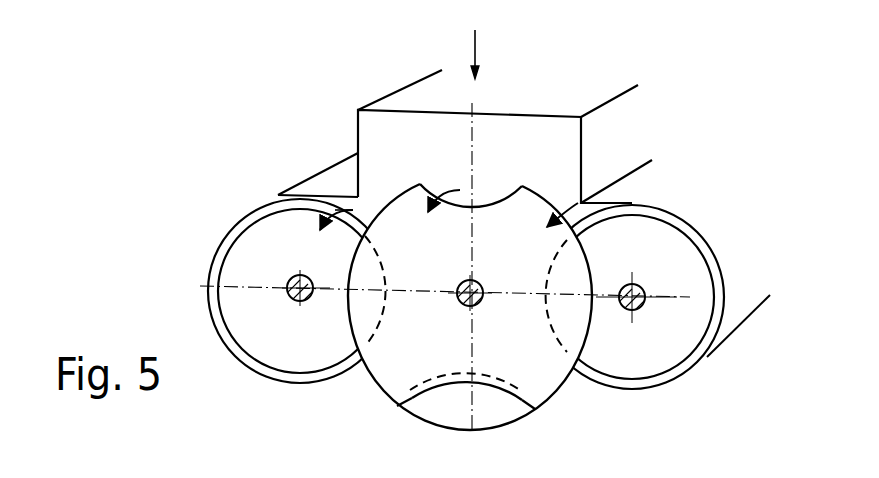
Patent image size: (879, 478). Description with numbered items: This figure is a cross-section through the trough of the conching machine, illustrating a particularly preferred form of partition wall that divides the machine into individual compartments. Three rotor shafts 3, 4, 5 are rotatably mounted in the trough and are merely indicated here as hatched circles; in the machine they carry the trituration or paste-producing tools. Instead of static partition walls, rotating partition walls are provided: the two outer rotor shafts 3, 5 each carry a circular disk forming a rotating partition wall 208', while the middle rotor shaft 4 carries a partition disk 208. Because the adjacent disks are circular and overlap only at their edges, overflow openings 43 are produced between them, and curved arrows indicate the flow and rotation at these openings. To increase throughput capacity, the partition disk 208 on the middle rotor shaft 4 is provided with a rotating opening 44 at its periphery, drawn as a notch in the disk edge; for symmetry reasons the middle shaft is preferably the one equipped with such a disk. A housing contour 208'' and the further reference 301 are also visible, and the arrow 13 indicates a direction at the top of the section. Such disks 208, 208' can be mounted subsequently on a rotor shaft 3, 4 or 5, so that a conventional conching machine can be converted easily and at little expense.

The section marker 301 is at (137, 9).
The direction of paper feed 13 is at (482, 37).
The rotating opening 44 is at (498, 180).
The partition disk 208 is at (465, 124).
The rotating partition walls 208' is at (466, 262).
The lower lobe segment 208'' is at (505, 402).
The overflow openings 43 is at (343, 210).
The rotor shaft 3 is at (304, 301).
The middle rotor shaft 4 is at (476, 306).
The rotor shaft 5 is at (638, 308).